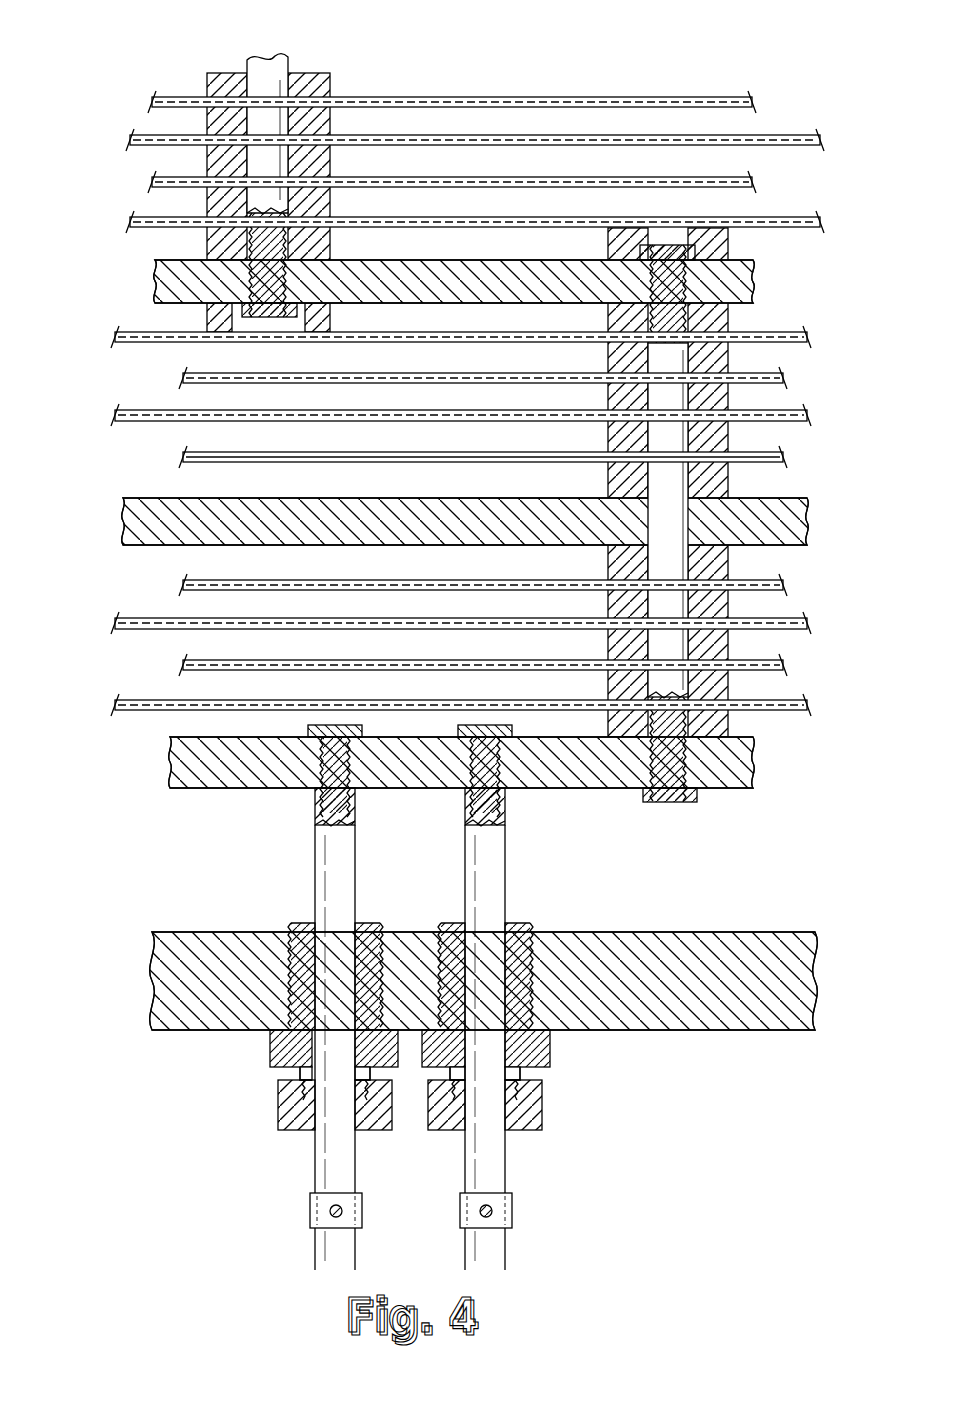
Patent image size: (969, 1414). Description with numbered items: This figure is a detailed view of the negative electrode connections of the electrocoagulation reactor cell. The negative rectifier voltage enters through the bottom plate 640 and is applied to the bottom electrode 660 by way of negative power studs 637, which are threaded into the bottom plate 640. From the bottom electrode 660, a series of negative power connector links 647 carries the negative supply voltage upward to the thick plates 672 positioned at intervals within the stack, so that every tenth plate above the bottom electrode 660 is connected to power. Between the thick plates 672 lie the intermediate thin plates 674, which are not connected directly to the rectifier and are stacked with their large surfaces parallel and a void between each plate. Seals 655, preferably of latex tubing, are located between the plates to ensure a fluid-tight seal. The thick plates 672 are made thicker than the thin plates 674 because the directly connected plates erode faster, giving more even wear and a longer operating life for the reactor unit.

The negative power studs 637 is at (313, 1160).
The bottom plate 640 is at (655, 1032).
The negative power connector links 647 is at (247, 62).
The seals 655 is at (200, 130).
The bottom electrode 660 is at (177, 766).
The thick plate 672 is at (157, 285).
The thin plates 674 is at (783, 136).